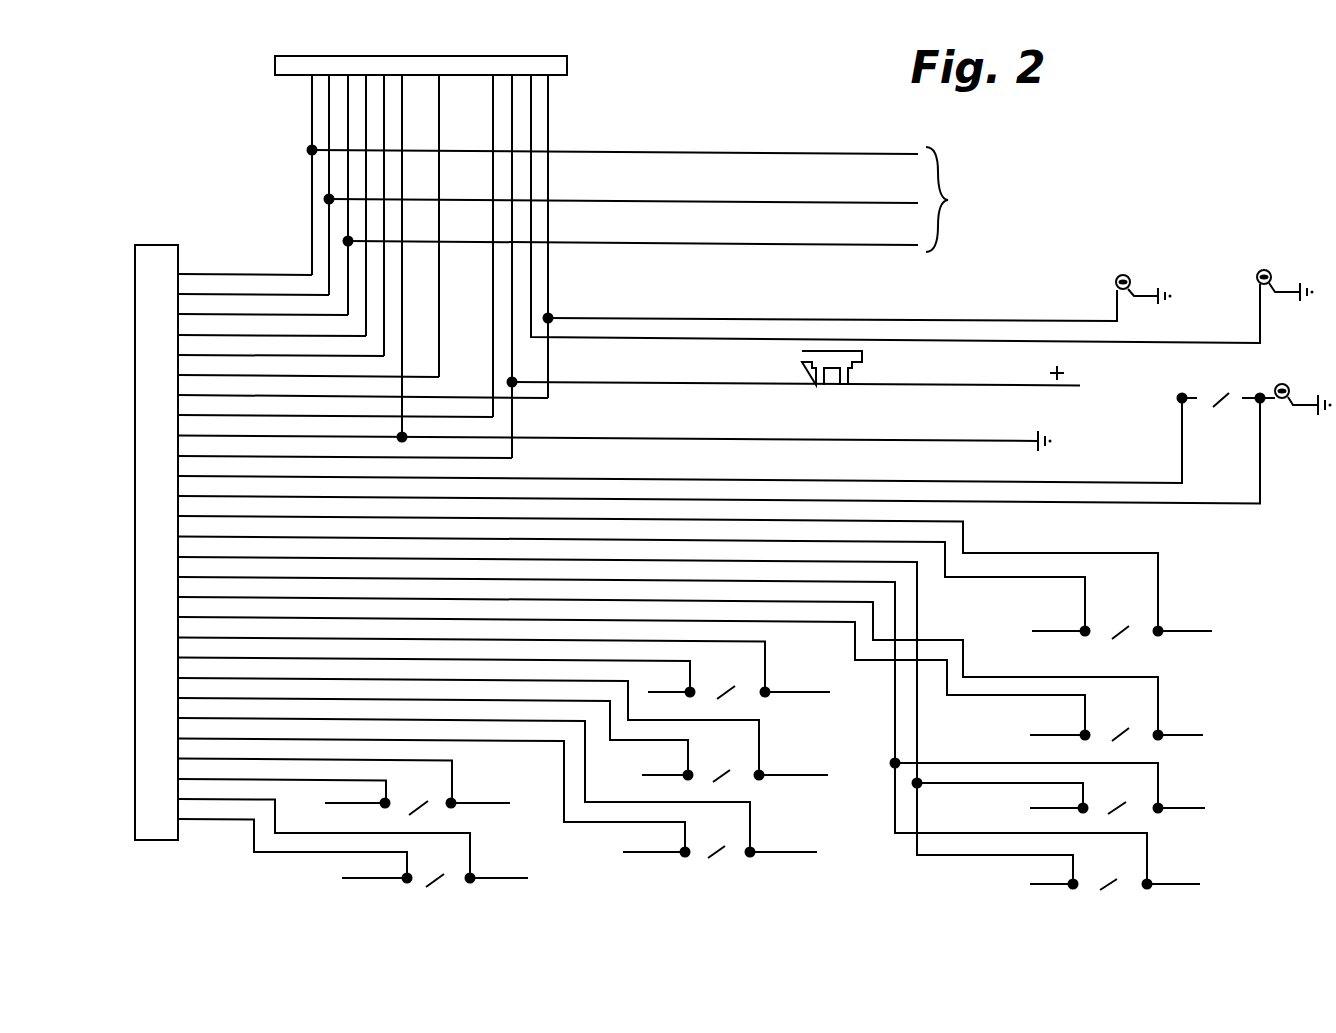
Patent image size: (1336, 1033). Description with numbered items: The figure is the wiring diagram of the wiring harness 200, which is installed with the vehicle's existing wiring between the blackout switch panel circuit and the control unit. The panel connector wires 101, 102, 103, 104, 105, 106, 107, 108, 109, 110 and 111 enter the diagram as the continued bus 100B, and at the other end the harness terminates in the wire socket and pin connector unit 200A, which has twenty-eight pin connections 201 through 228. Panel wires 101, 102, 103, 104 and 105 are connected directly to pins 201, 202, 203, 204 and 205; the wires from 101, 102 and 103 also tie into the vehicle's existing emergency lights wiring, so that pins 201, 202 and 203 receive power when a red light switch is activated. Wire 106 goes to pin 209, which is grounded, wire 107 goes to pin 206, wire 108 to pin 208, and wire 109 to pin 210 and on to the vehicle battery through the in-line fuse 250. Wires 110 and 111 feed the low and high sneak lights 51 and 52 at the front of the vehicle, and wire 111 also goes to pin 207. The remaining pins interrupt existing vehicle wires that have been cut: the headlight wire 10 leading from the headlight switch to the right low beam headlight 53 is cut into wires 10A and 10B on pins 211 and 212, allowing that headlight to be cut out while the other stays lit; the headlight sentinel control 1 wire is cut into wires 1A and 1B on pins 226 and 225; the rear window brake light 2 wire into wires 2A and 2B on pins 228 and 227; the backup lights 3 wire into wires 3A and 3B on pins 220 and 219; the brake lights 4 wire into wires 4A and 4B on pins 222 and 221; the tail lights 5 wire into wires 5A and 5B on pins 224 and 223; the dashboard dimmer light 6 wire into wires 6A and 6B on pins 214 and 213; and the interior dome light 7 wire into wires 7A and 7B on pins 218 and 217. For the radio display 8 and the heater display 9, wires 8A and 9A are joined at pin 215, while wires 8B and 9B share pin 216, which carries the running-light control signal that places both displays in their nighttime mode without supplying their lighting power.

The wiring harness 200 is at (1167, 170).
The wire socket and pin connector unit 200A is at (152, 245).
The panel connector wires continuation 100B is at (567, 64).
The panel connector wire 101 is at (303, 175).
The panel connector wire 102 is at (320, 185).
The panel connector wire 103 is at (339, 195).
The panel connector wire 104 is at (354, 205).
The panel connector wire 105 is at (372, 215).
The panel connector wire 106 is at (393, 259).
The panel connector wire 107 is at (427, 226).
The panel connector wire 108 is at (481, 246).
The panel connector wire 109 is at (503, 266).
The panel connector wire 110 is at (884, 209).
The panel connector wire 111 is at (821, 236).
The pin connection 201 is at (225, 264).
The pin connection 202 is at (233, 284).
The pin connection 203 is at (243, 304).
The pin connection 204 is at (252, 325).
The pin connection 205 is at (261, 345).
The pin connection 206 is at (288, 365).
The pin connection 207 is at (343, 386).
The pin connection 208 is at (315, 405).
The pin connection 209 is at (588, 427).
The pin connection 210 is at (325, 446).
The pin connection 211 is at (660, 440).
The pin connection 212 is at (699, 451).
The pin connection 213 is at (648, 563).
The pin connection 214 is at (611, 573).
The pin connection 215 is at (610, 710).
The pin connection 216 is at (648, 720).
The pin connection 217 is at (648, 655).
The pin connection 218 is at (611, 665).
The pin connection 219 is at (451, 654).
The pin connection 220 is at (414, 664).
The pin connection 221 is at (448, 716).
The pin connection 222 is at (413, 726).
The pin connection 223 is at (444, 774).
The pin connection 224 is at (411, 784).
The pin connection 225 is at (295, 770).
The pin connection 226 is at (262, 780).
The pin connection 227 is at (304, 828).
The pin connection 228 is at (272, 838).
The in-line fuse 250 is at (800, 352).
The sneak light 51 is at (1115, 277).
The sneak light 52 is at (1257, 272).
The right low beam headlight 53 is at (1276, 384).
The switch 10 is at (1229, 409).
The wire 10A is at (1162, 416).
The wire 10B is at (1289, 417).
The headlight sentinel control 1 is at (437, 801).
The wire 1A is at (358, 795).
The wire 1B is at (478, 795).
The rear window brake light 2 is at (451, 870).
The wire 2A is at (377, 869).
The wire 2B is at (497, 869).
The backup lights 3 is at (757, 689).
The wire 3A is at (672, 681).
The wire 3B is at (795, 681).
The rear brake lights 4 is at (753, 766).
The wire 4A is at (668, 763).
The wire 4B is at (791, 763).
The tail lights 5 is at (743, 842).
The wire 5A is at (657, 842).
The wire 5B is at (781, 842).
The dashboard dimmer light 6 is at (1136, 632).
The wire 6A is at (1061, 618).
The wire 6B is at (1183, 618).
The interior dome light 7 is at (1143, 731).
The wire 7A is at (1060, 722).
The wire 7B is at (1178, 722).
The radio digital display 8 is at (1146, 796).
The wire 8A is at (1059, 800).
The wire 8B is at (1179, 800).
The heater display 9 is at (1138, 875).
The wire 9A is at (1054, 874).
The wire 9B is at (1171, 874).